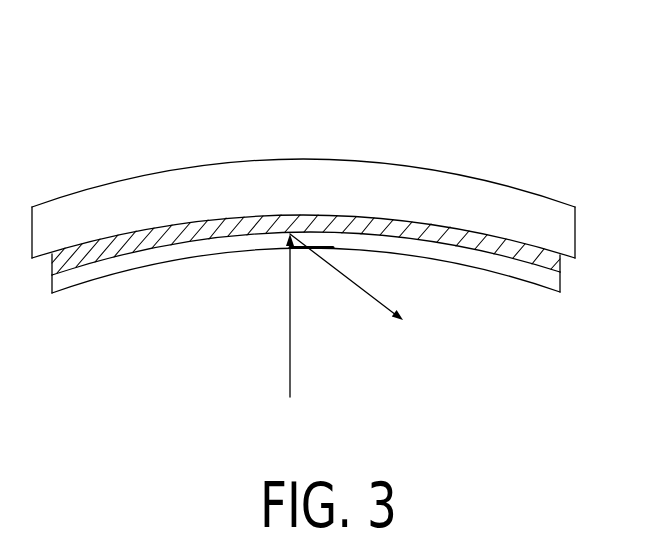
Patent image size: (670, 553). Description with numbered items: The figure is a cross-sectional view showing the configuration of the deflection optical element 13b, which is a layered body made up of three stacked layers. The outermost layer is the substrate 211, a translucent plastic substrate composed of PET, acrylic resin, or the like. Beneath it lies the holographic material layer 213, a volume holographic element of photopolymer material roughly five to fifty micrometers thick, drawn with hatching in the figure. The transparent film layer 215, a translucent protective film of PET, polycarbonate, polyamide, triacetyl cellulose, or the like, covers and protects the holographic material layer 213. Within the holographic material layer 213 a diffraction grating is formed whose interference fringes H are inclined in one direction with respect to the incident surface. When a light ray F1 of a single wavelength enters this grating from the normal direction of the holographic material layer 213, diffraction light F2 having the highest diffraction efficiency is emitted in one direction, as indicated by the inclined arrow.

The deflection optical element 13b is at (472, 116).
The substrate 211 is at (151, 180).
The holographic material layer 213 is at (557, 265).
The transparent film layer 215 is at (92, 273).
The interference fringes H is at (145, 238).
The light ray F1 is at (295, 329).
The diffraction light F2 is at (359, 289).